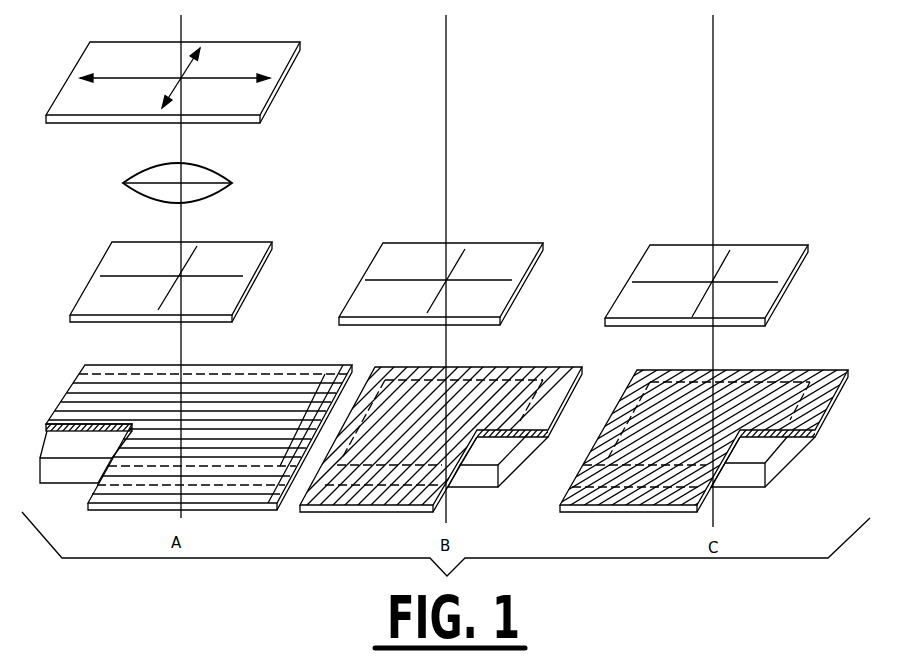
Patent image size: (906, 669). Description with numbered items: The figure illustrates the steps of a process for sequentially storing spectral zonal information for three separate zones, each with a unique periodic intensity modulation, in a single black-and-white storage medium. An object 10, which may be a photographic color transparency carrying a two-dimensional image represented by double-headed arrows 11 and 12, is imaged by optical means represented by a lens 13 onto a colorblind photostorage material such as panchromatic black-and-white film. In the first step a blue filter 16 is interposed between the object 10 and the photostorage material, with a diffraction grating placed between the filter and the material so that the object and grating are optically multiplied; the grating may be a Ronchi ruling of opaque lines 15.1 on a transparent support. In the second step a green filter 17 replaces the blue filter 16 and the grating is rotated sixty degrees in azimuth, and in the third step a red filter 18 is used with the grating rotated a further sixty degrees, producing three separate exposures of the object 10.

The object 10 is at (80, 58).
The double-headed arrow 11 is at (190, 62).
The double-headed arrow 12 is at (137, 78).
The lens 13 is at (145, 166).
The opaque lines 15.1 is at (85, 363).
The blue filter 16 is at (118, 257).
The green filter 17 is at (415, 242).
The red filter 18 is at (682, 243).